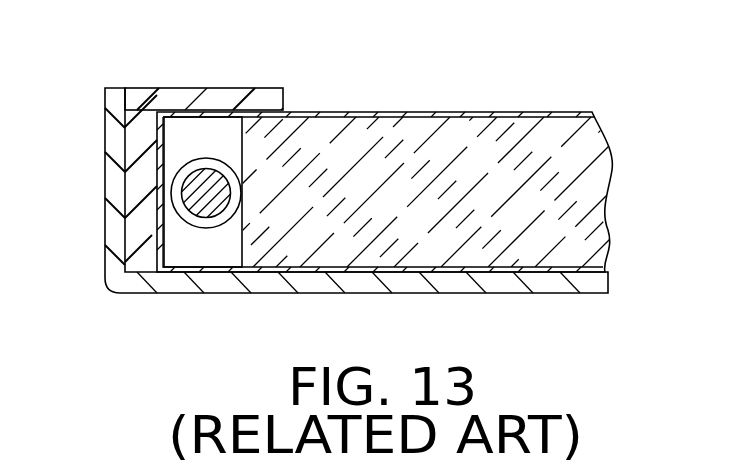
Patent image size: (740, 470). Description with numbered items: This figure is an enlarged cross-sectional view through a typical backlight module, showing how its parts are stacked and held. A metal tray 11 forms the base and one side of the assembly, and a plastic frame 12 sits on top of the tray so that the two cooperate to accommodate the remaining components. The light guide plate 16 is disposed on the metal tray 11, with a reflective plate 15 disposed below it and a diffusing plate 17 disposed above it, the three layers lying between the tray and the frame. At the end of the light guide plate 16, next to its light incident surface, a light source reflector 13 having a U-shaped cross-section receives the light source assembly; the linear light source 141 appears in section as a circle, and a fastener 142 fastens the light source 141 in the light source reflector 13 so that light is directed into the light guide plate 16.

The metal tray 11 is at (115, 133).
The plastic frame 12 is at (173, 97).
The light source reflector 13 is at (211, 268).
The linear light source 141 is at (200, 183).
The fasteners 142 is at (178, 245).
The reflective plate 15 is at (435, 270).
The light guide plate 16 is at (513, 217).
The diffusing plate 17 is at (540, 112).